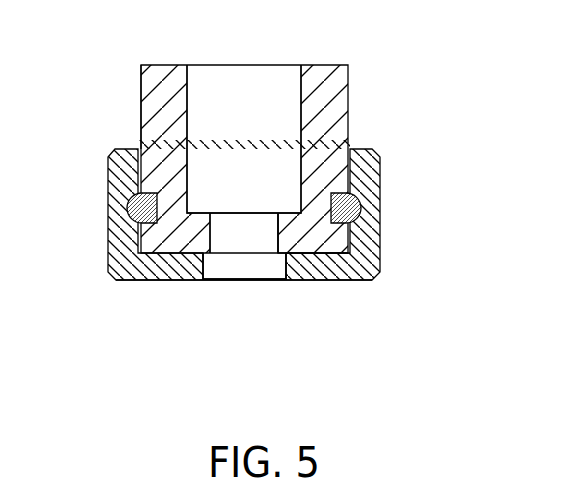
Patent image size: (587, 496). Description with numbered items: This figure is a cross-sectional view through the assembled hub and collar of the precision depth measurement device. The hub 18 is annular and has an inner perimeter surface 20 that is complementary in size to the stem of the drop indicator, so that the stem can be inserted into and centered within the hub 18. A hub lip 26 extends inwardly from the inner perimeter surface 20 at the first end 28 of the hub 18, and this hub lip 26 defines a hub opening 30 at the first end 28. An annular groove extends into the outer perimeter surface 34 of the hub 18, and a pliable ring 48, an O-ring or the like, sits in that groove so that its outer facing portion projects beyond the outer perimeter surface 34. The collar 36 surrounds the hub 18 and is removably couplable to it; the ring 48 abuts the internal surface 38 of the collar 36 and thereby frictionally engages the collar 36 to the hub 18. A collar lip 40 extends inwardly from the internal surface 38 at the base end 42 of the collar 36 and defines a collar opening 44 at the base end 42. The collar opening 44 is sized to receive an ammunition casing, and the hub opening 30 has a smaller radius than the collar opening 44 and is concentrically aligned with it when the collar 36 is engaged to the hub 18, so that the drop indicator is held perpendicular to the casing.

The hub 18 is at (348, 122).
The inner perimeter surface 20 is at (186, 92).
The outer perimeter surface 34 is at (141, 90).
The internal surface 38 is at (125, 162).
The ring 48 is at (355, 198).
The collar 36 is at (380, 233).
The hub opening 30 is at (247, 237).
The first end 28 is at (227, 255).
The collar opening 44 is at (213, 272).
The collar lip 40 is at (288, 255).
The hub lip 26 is at (283, 222).
The base end 42 is at (352, 281).